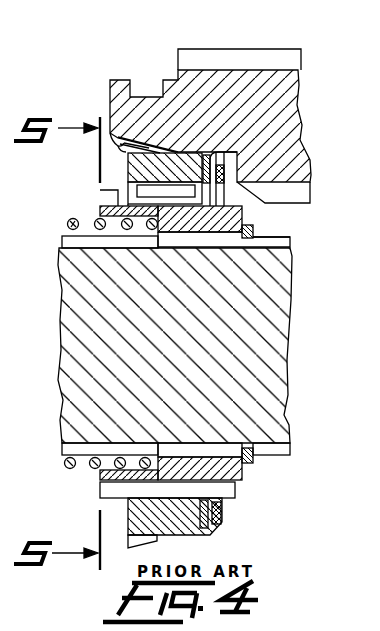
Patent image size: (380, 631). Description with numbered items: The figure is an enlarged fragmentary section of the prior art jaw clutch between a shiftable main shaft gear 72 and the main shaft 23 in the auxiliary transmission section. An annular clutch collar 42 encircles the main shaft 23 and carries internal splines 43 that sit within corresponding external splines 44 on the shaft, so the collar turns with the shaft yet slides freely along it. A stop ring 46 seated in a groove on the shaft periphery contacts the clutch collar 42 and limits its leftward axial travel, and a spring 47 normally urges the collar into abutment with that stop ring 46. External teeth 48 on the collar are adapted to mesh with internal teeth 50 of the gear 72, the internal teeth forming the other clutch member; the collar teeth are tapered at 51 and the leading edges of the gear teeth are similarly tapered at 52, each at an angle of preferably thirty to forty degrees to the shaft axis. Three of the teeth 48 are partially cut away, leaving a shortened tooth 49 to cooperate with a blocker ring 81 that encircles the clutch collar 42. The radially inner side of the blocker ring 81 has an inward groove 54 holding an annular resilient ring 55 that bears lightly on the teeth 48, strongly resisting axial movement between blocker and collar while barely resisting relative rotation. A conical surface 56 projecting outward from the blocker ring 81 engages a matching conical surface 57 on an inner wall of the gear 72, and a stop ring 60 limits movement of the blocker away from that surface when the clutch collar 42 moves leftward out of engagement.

The main shaft 23 is at (73, 351).
The clutch collar 42 is at (100, 212).
The internal splines 43 is at (187, 239).
The external splines 44 is at (287, 239).
The stop ring 46 is at (265, 240).
The spring 47 is at (66, 226).
The external teeth 48 is at (86, 493).
The shortened tooth 49 is at (108, 193).
The internal teeth 50 is at (300, 192).
The tapered surface of collar teeth 51 is at (221, 497).
The tapered surface of gear teeth 52 is at (265, 199).
The groove 54 is at (212, 180).
The resilient ring 55 is at (247, 156).
The conical surface 56 is at (150, 128).
The conical surface 57 is at (121, 136).
The stop ring 60 is at (119, 148).
The main shaft gear 72 is at (290, 38).
The blocker ring 81 is at (168, 157).